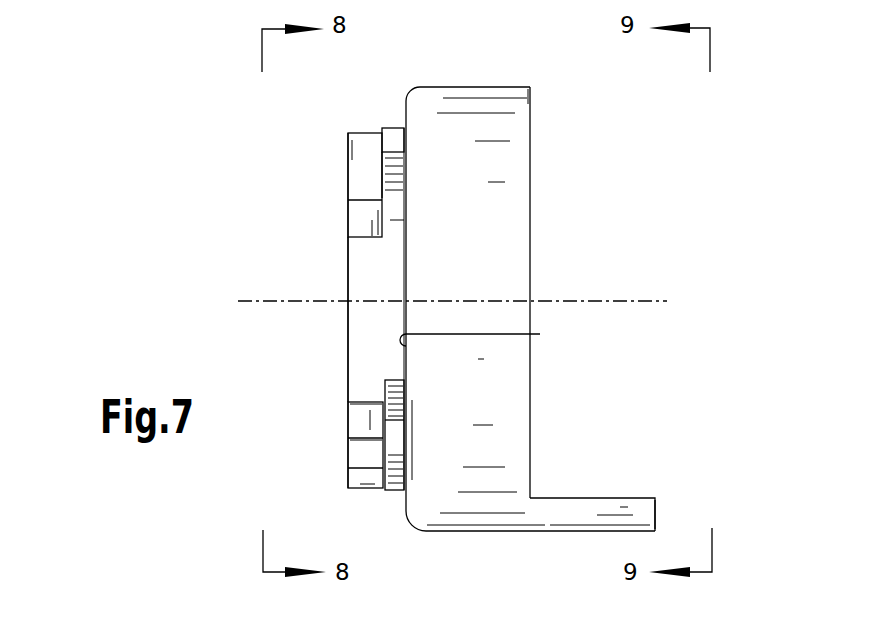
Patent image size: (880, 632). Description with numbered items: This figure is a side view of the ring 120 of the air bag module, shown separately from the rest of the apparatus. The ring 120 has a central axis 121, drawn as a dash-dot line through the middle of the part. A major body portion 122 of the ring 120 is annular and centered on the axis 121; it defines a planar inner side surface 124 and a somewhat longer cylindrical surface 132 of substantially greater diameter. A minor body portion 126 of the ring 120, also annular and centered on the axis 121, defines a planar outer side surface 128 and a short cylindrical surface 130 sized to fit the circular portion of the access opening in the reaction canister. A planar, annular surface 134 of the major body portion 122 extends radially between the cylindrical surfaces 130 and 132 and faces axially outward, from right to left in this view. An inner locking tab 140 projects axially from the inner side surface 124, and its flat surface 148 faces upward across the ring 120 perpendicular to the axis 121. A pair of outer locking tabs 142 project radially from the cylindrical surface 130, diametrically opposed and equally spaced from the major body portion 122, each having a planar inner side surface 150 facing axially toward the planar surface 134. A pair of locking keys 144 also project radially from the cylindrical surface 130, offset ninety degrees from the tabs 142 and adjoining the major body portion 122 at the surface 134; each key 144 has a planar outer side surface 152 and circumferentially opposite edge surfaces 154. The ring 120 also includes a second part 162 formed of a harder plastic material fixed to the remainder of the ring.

The ring 120 is at (198, 172).
The central axis 121 is at (258, 300).
The major body portion 122 is at (502, 97).
The inner side surface 124 is at (530, 168).
The minor body portion 126 is at (373, 268).
The outer side surface 128 is at (349, 320).
The cylindrical surface 130 is at (372, 338).
The cylindrical surface 132 is at (478, 287).
The planar annular surface 134 is at (540, 334).
The inner locking tab 140 is at (657, 512).
The outer locking tabs 142 is at (362, 167).
The locking keys 144 is at (392, 122).
The flat surface 148 is at (567, 497).
The inner side surface 150 is at (383, 178).
The outer side surface 152 is at (383, 438).
The edge surfaces 154 is at (383, 402).
The second part 162 is at (548, 100).